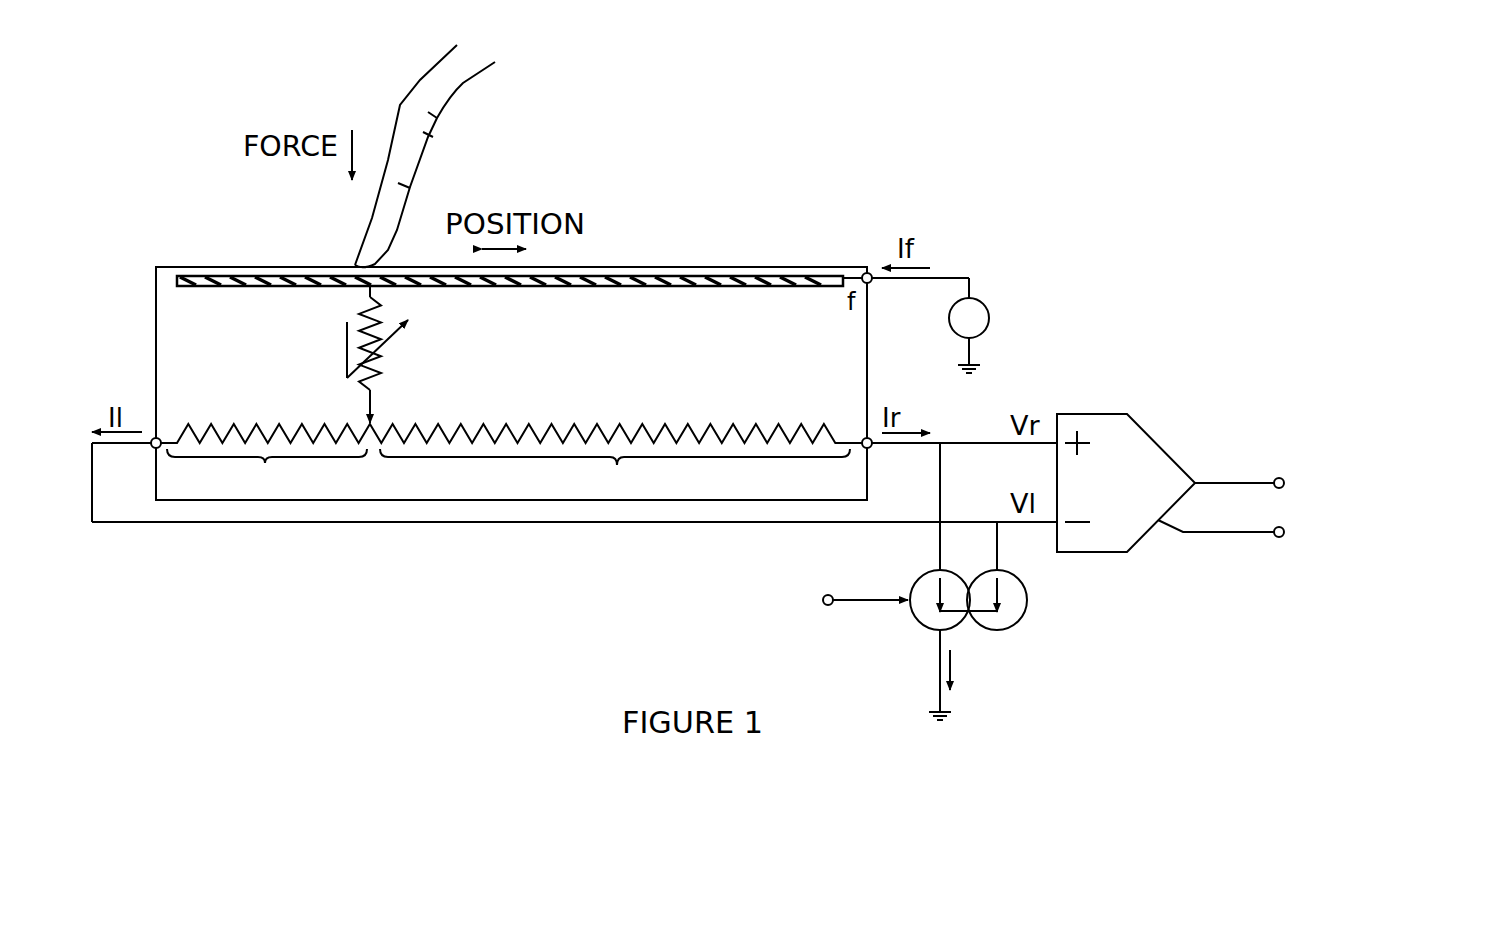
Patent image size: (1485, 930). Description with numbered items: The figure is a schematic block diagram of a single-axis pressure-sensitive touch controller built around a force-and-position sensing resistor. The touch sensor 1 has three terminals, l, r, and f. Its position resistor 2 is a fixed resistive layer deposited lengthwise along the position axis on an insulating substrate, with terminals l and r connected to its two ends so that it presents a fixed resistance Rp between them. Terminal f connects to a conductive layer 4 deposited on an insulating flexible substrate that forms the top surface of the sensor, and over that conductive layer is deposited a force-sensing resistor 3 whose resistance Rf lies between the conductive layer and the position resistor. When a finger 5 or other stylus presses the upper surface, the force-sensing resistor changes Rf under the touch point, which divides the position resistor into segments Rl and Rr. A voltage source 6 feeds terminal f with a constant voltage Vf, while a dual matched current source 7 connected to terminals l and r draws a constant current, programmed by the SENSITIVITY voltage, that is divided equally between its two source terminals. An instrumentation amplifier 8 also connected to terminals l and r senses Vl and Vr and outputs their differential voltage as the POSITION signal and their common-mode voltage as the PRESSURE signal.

The touch sensor 1 is at (153, 343).
The position resistor 2 is at (688, 423).
The force-sensing resistor 3 is at (343, 352).
The conductive layer 4 is at (705, 286).
The finger 5 is at (433, 136).
The voltage source 6 is at (983, 304).
The dual matched current source 7 is at (1018, 618).
The instrumentation amplifier 8 is at (1138, 433).